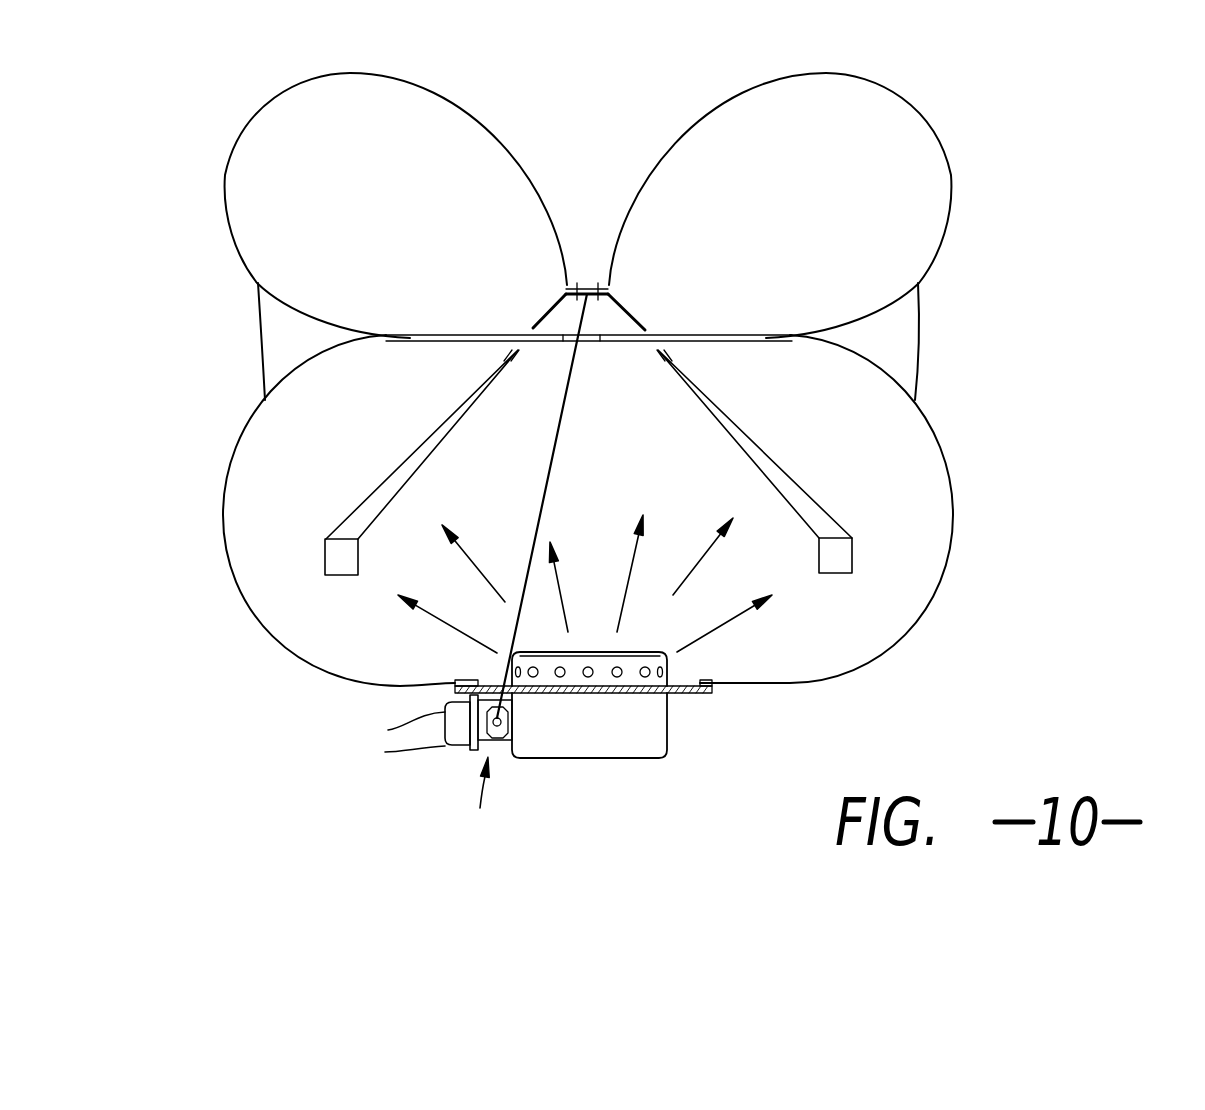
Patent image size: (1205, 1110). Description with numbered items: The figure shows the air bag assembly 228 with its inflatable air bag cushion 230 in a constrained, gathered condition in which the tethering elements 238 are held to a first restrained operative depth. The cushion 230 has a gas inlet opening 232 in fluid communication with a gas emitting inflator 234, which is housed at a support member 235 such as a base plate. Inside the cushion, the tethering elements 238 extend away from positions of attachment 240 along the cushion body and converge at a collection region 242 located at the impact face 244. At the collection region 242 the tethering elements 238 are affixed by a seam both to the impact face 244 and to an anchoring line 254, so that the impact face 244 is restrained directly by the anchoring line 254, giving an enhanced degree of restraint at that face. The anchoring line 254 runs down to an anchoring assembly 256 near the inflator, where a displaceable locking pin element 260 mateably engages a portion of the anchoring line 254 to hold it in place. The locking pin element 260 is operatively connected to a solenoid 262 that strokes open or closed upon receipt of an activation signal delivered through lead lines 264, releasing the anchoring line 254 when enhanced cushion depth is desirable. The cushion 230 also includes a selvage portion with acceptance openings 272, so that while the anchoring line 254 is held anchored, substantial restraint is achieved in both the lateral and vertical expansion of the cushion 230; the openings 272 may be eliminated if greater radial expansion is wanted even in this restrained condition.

The air bag assembly 228 is at (979, 107).
The air bag cushion 230 is at (969, 181).
The impact face 244 is at (722, 100).
The collection region 242 is at (610, 225).
The acceptance openings 272 is at (590, 333).
The anchoring line 254 is at (572, 388).
The tethering elements 238 is at (418, 445).
The positions of attachment 240 is at (337, 560).
The gas inlet opening 232 is at (702, 680).
The support member 235 is at (653, 693).
The gas emitting inflator 234 is at (632, 740).
The solenoid 262 is at (452, 750).
The locking pin element 260 is at (498, 742).
The lead lines 264 is at (412, 742).
The anchoring assembly 256 is at (468, 803).